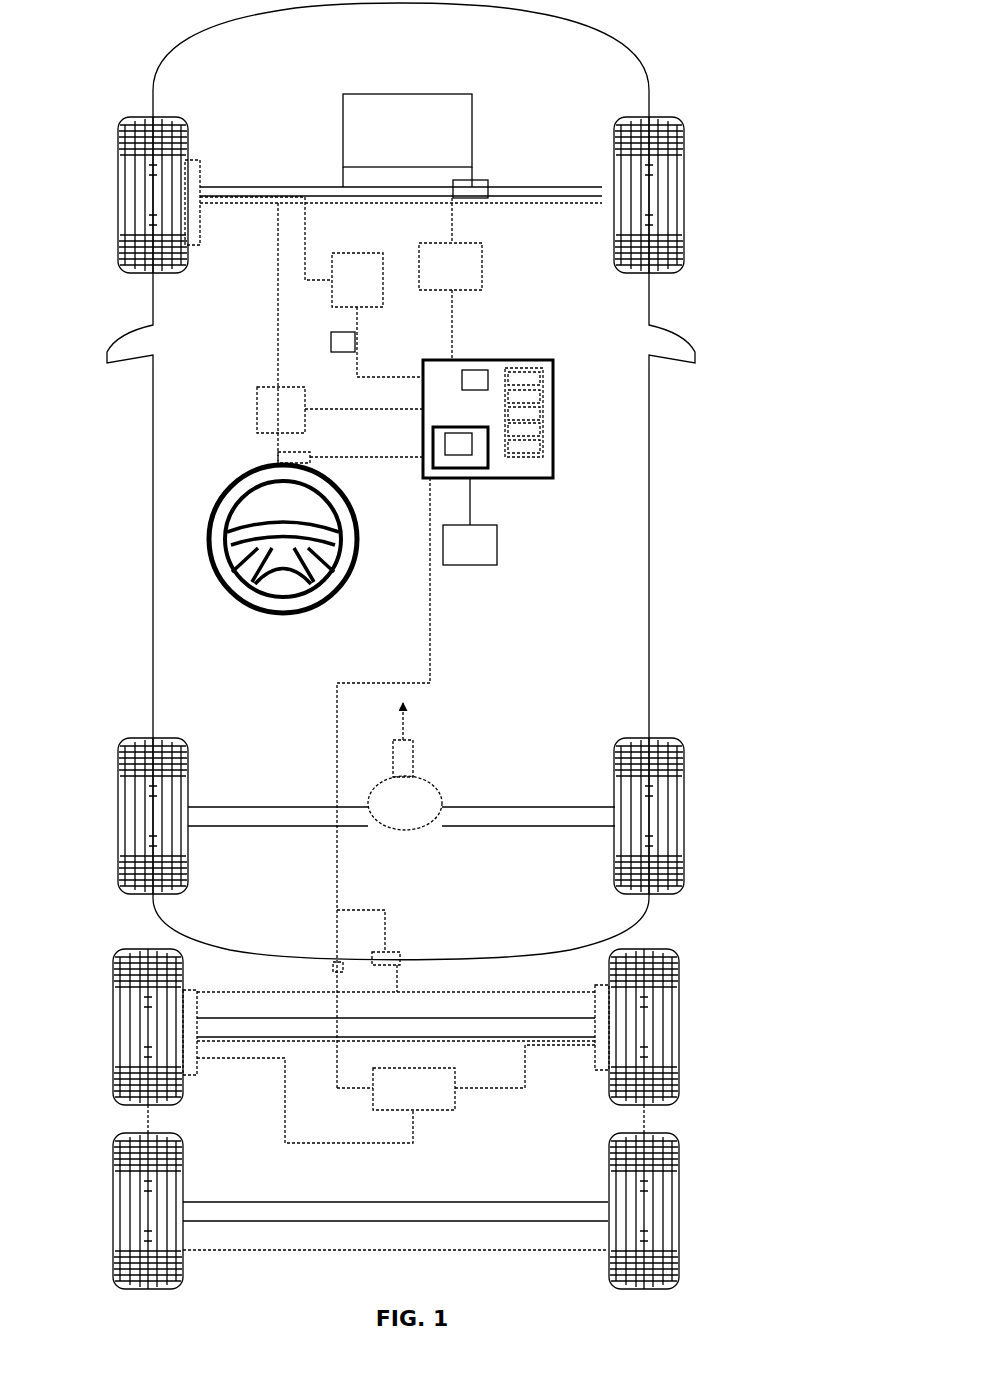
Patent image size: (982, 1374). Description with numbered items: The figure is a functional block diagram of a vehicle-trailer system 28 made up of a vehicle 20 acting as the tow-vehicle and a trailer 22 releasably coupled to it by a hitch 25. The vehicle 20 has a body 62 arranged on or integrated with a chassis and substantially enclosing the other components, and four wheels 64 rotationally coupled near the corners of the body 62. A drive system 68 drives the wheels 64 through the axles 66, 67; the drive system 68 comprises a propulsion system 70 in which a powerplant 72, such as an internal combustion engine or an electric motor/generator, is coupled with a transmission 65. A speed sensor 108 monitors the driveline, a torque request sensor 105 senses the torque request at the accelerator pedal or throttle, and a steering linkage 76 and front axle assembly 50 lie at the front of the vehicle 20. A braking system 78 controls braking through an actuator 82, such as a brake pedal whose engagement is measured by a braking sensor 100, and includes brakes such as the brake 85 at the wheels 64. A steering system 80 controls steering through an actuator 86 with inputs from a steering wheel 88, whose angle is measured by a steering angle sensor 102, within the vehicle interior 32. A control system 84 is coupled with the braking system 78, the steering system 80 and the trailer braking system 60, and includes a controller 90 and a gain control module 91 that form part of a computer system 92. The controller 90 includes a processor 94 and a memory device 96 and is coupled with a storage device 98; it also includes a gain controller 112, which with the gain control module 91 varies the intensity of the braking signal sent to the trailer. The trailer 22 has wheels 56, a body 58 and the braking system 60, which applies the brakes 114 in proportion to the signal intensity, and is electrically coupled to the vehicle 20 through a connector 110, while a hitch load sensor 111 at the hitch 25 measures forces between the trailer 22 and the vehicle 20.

The vehicle 20 is at (392, 481).
The trailer 22 is at (406, 1117).
The hitch 25 is at (397, 982).
The vehicle-trailer system 28 is at (757, 428).
The passenger cabin 32 is at (492, 608).
The front axle assembly 50 is at (393, 179).
The wheels 56 is at (113, 1020).
The body 58 is at (648, 1120).
The braking system 60 is at (452, 1131).
The body 62 is at (153, 540).
The wheels 64 is at (118, 190).
The transmission 65 is at (343, 175).
The axle 66 is at (540, 187).
The axle 67 is at (520, 806).
The drive system 68 is at (351, 138).
The propulsion system 70 is at (371, 128).
The powerplant 72 is at (394, 140).
The steering linkage 76 is at (276, 313).
The braking system 78 is at (311, 313).
The steering system 80 is at (363, 618).
The actuator 82 is at (344, 292).
The control system 84 is at (532, 602).
The brake 85 is at (197, 160).
The actuator 86 is at (257, 413).
The steering wheel 88 is at (228, 598).
The controller 90 is at (464, 428).
The gain control module 91 is at (445, 455).
The computer system 92 is at (498, 428).
The processor 94 is at (475, 370).
The memory device 96 is at (527, 460).
The storage device 98 is at (443, 555).
The braking sensor 100 is at (340, 352).
The steering angle sensor 102 is at (278, 455).
The torque request sensor 105 is at (433, 277).
The speed sensor 108 is at (486, 180).
The connector 110 is at (335, 963).
The hitch load sensor 111 is at (400, 956).
The gain controller 112 is at (432, 485).
The brakes 114 is at (195, 1075).